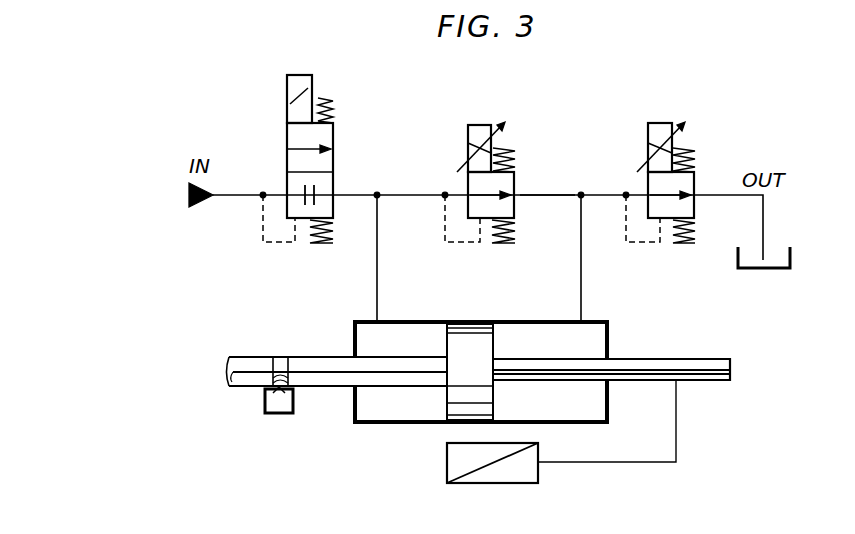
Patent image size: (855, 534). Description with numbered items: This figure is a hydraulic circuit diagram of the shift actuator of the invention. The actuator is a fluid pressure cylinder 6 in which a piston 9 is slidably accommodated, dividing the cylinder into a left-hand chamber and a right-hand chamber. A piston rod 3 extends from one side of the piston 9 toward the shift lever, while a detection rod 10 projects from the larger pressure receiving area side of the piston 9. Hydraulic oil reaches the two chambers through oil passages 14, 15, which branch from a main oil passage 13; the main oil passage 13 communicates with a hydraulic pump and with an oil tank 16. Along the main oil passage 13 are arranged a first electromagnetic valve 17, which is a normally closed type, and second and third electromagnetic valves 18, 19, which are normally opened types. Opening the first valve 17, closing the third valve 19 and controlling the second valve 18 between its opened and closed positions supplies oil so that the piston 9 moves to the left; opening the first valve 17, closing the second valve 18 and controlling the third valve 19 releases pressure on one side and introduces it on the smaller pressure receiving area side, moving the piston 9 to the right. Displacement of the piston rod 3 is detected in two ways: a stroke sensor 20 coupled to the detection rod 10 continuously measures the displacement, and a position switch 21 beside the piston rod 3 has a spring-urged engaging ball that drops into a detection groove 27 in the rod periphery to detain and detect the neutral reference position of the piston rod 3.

The piston rod 3 is at (327, 362).
The cylinder 6 is at (400, 412).
The piston 9 is at (467, 338).
The detection rod 10 is at (690, 363).
The main oil passage 13 is at (545, 193).
The oil passage 14 is at (378, 268).
The oil passage 15 is at (581, 268).
The oil tank 16 is at (773, 273).
The first electromagnetic valve 17 is at (293, 140).
The second electromagnetic valve 18 is at (479, 133).
The third electromagnetic valve 19 is at (660, 132).
The stroke sensor 20 is at (502, 475).
The position switch 21 is at (266, 398).
The detection groove 27 is at (281, 363).